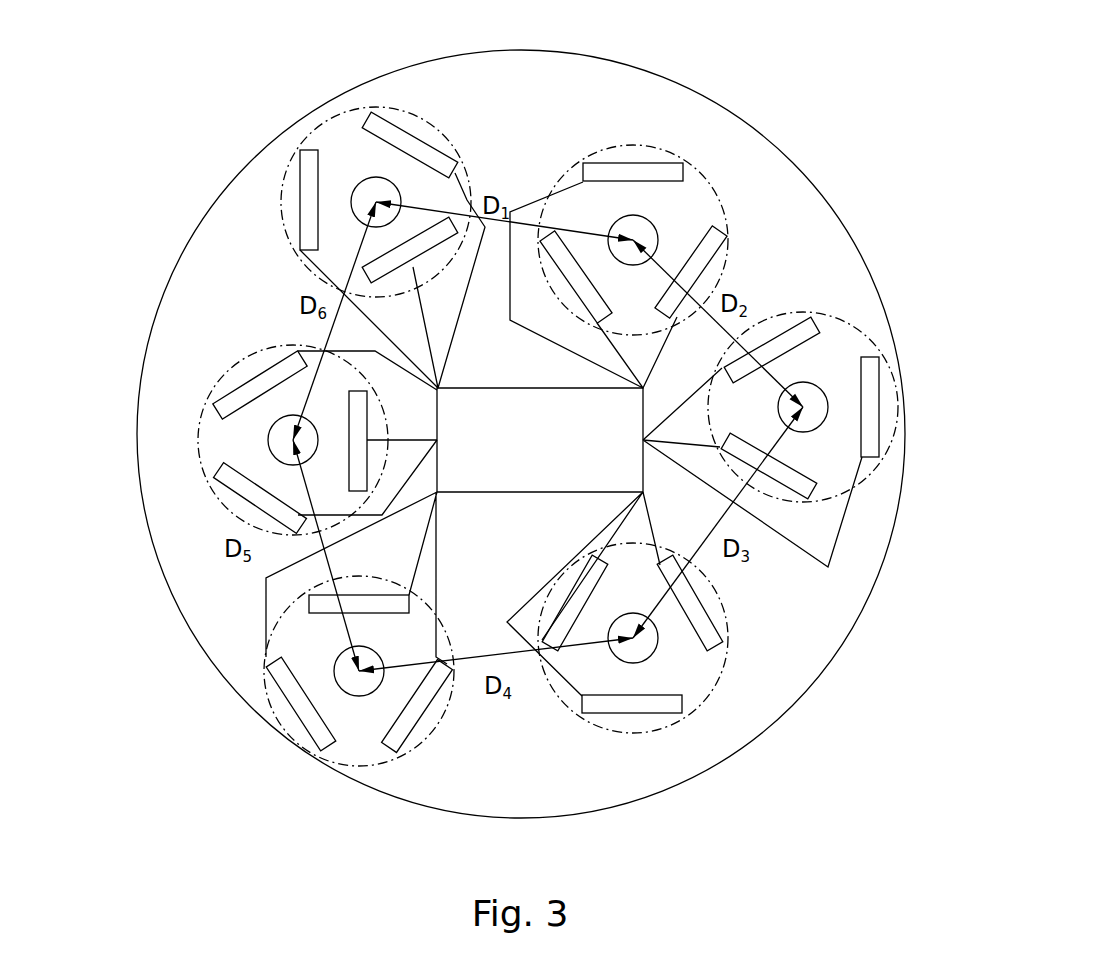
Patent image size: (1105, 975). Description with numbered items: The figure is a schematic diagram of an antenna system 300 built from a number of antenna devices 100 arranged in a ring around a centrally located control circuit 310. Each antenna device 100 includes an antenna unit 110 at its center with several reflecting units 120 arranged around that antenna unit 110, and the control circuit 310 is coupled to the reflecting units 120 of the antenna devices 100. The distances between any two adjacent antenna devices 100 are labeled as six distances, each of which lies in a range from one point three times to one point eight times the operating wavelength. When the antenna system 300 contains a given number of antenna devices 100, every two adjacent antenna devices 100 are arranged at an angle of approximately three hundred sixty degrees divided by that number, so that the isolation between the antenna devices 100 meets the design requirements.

The antenna device 100 is at (287, 172).
The antenna unit 110 is at (370, 187).
The reflecting units 120 is at (377, 122).
The antenna system 300 is at (1027, 117).
The control circuit 310 is at (521, 452).